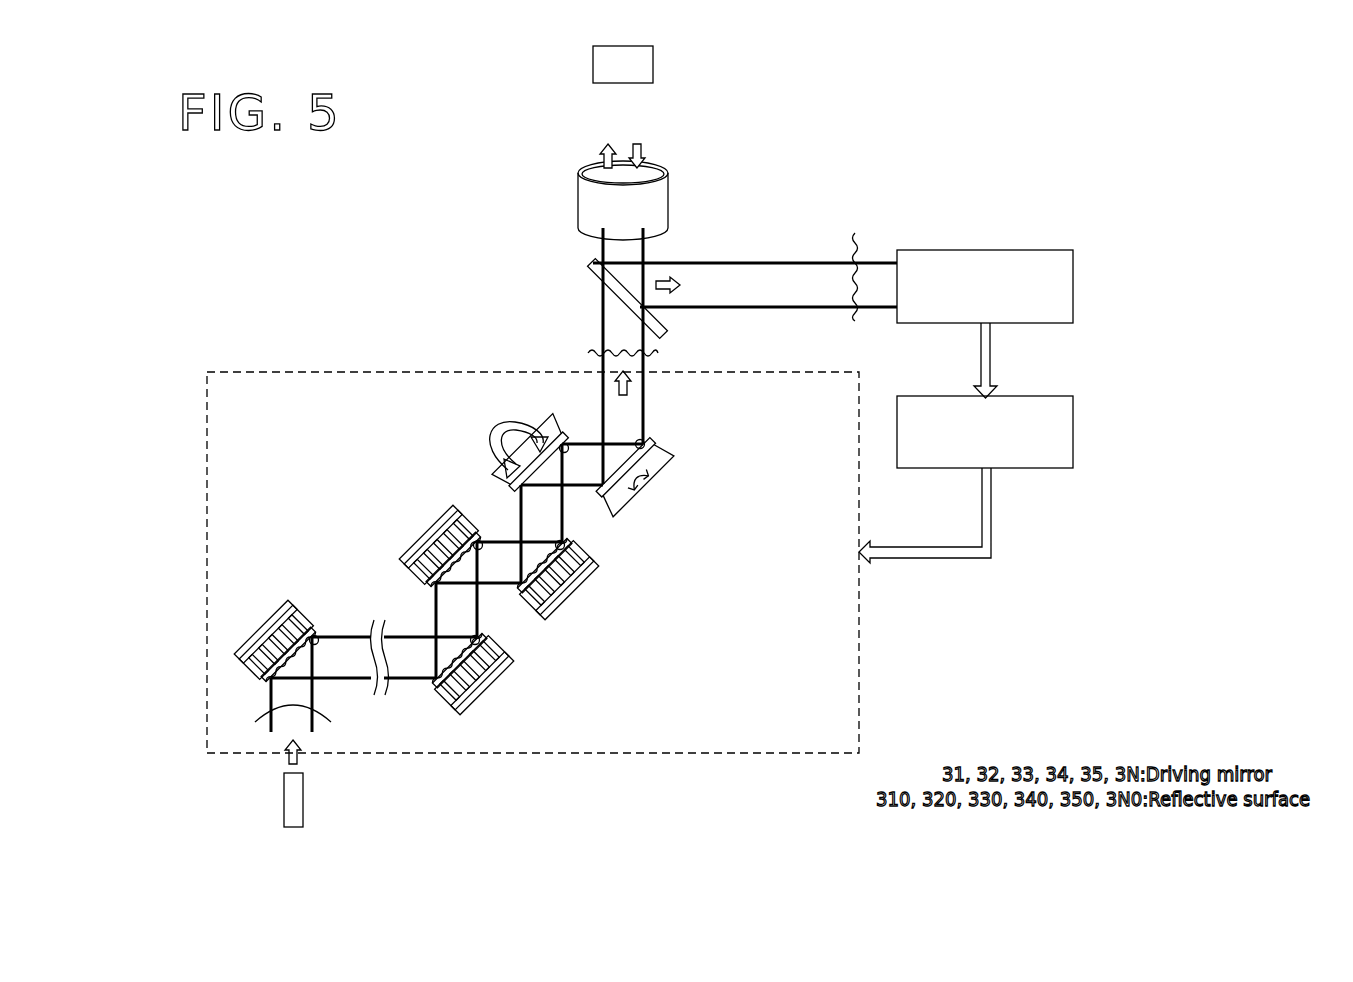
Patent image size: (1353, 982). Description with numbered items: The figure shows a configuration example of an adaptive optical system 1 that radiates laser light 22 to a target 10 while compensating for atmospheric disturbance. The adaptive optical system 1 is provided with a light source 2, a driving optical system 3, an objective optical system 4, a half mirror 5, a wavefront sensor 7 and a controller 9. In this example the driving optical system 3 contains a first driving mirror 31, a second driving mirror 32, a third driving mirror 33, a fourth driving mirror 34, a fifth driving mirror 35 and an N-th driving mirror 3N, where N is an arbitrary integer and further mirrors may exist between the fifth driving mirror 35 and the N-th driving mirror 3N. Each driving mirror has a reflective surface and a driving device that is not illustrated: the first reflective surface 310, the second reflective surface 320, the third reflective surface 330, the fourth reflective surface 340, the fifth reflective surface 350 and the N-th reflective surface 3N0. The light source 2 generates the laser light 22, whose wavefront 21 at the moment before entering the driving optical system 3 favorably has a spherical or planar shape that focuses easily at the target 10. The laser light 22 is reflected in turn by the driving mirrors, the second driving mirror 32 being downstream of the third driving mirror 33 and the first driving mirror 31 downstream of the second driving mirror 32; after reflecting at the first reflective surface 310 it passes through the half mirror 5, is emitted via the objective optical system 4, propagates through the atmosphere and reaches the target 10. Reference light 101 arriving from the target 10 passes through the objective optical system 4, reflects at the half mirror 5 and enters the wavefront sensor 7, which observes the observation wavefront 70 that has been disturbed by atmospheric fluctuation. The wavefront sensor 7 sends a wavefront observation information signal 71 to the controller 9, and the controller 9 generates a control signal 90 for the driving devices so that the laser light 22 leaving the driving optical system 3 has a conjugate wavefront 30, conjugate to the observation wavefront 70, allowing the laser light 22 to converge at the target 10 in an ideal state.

The adaptive optical system 1 is at (870, 70).
The light source 2 is at (285, 803).
The driving optical system 3 is at (290, 372).
The objective optical system 4 is at (584, 205).
The half mirror 5 is at (598, 270).
The wavefront sensor 7 is at (1074, 289).
The controller 9 is at (1074, 434).
The target 10 is at (593, 64).
The wavefront 21 is at (328, 720).
The laser light 22 is at (604, 146).
The conjugate wavefront 30 is at (596, 353).
The first driving mirror 31 is at (647, 465).
The second driving mirror 32 is at (522, 442).
The third driving mirror 33 is at (577, 576).
The fourth driving mirror 34 is at (444, 538).
The fifth driving mirror 35 is at (493, 675).
The N-th driving mirror 3N is at (288, 633).
The observation wavefront 70 is at (912, 265).
The wavefront observation information signal 71 is at (991, 352).
The control signal 90 is at (960, 558).
The reference light 101 is at (645, 151).
The first reflective surface 310 is at (643, 442).
The second reflective surface 320 is at (566, 446).
The third reflective surface 330 is at (566, 541).
The fourth reflective surface 340 is at (478, 541).
The fifth reflective surface 350 is at (487, 639).
The N-th reflective surface 3N0 is at (318, 636).